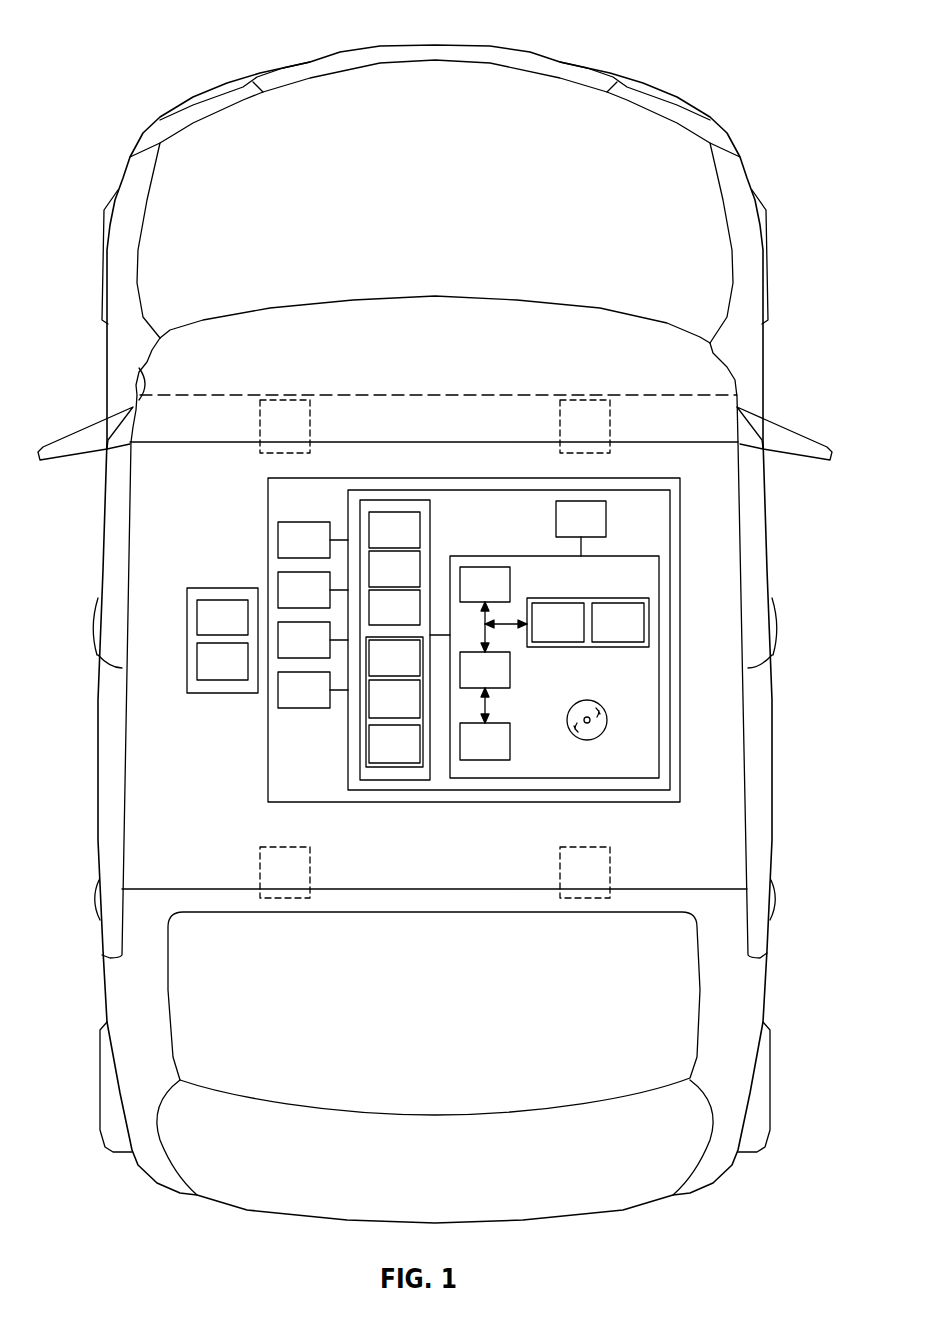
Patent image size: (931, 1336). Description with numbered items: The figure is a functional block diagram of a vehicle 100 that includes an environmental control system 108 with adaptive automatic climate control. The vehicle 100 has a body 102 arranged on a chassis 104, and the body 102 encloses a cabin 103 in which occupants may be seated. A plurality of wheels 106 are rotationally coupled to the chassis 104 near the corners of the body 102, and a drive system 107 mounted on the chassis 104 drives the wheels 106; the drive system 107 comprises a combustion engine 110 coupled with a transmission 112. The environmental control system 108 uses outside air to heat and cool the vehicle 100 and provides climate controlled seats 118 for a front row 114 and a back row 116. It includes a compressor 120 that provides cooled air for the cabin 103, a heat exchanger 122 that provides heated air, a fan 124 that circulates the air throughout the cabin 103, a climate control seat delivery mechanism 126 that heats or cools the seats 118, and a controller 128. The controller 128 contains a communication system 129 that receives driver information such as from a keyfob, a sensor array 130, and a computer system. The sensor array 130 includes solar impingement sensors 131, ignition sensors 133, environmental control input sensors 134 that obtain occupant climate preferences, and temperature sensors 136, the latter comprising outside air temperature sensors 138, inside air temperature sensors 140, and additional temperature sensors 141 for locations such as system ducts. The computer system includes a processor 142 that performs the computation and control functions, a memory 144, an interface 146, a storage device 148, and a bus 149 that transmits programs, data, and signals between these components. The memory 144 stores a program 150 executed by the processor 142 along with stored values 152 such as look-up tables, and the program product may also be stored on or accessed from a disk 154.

The vehicle 100 is at (128, 27).
The body 102 is at (138, 371).
The cabin 103 is at (453, 429).
The chassis 104 is at (217, 394).
The wheels 106 is at (102, 262).
The drive system 107 is at (222, 588).
The environmental control system 108 is at (680, 538).
The combustion engine 110 is at (242, 629).
The transmission 112 is at (242, 673).
The front row 114 is at (217, 443).
The back row 116 is at (225, 888).
The climate controlled seats 118 is at (305, 431).
The compressor 120 is at (324, 551).
The heat exchanger 122 is at (324, 601).
The fan 124 is at (324, 651).
The climate control seat delivery mechanism 126 is at (324, 701).
The controller 128 is at (670, 580).
The communication system 129 is at (601, 530).
The sensor array 130 is at (398, 500).
The solar impingement sensors 131 is at (414, 541).
The ignition sensors 133 is at (414, 580).
The environmental control input sensors 134 is at (414, 619).
The temperature sensors 136 is at (395, 767).
The outside air temperature sensors 138 is at (414, 669).
The inside air temperature sensors 140 is at (414, 710).
The additional temperature sensors 141 is at (414, 755).
The processor 142 is at (505, 596).
The memory 144 is at (640, 648).
The interface 146 is at (505, 681).
The storage device 148 is at (505, 753).
The bus 149 is at (490, 633).
The program 150 is at (578, 634).
The stored values 152 is at (638, 634).
The disk 154 is at (607, 723).